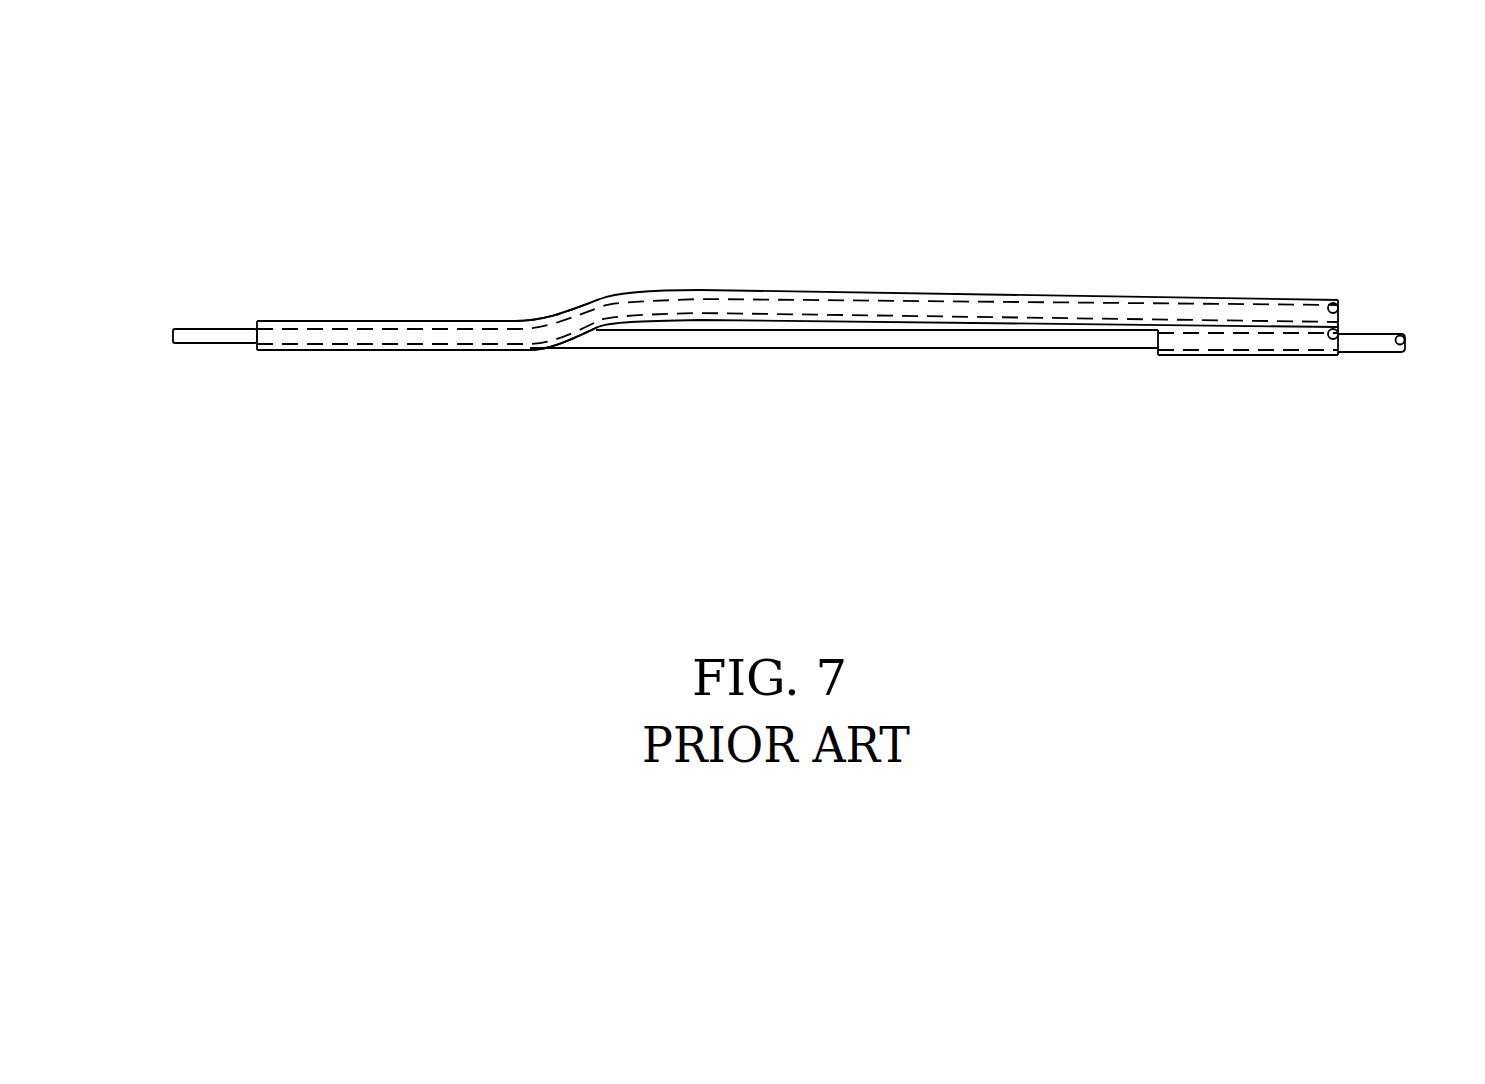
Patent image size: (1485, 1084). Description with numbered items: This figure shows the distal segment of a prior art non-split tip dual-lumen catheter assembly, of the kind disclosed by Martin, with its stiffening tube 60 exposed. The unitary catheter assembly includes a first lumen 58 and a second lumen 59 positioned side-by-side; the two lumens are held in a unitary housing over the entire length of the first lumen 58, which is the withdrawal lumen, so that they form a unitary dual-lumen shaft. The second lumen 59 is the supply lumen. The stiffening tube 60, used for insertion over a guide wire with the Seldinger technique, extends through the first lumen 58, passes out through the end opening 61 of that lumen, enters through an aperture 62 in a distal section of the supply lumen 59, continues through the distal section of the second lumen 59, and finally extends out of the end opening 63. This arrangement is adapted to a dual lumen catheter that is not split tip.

The first lumen 58 is at (1213, 365).
The second lumen 59 is at (586, 295).
The stiffening tube 60 is at (206, 357).
The end opening 61 is at (1145, 367).
The aperture 62 is at (546, 366).
The end opening 63 is at (243, 304).